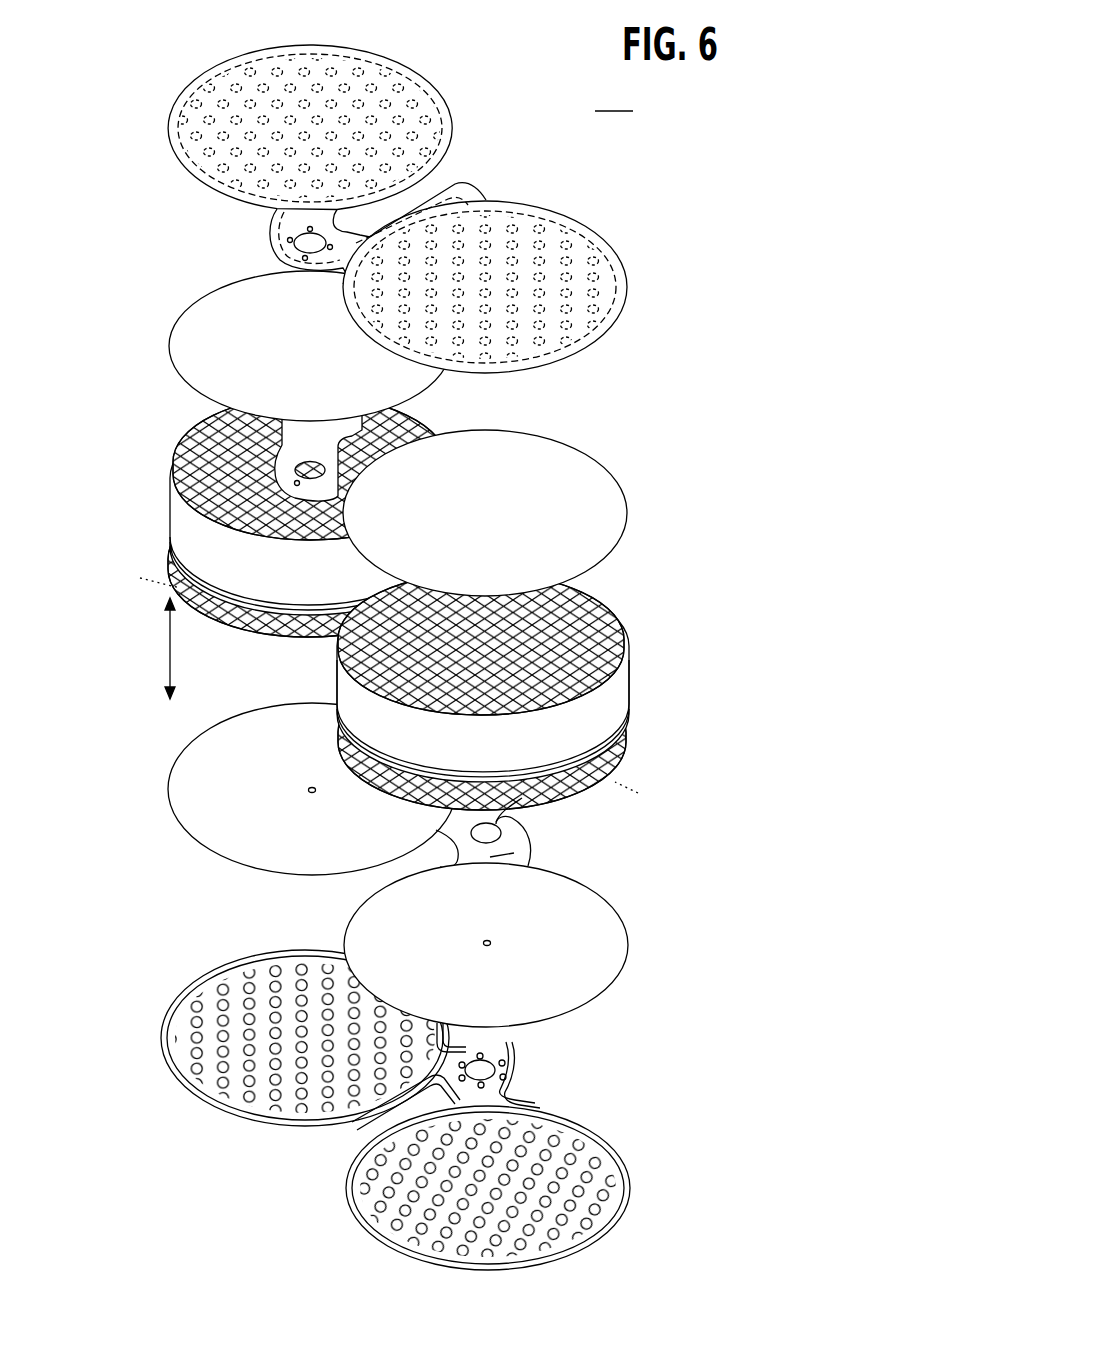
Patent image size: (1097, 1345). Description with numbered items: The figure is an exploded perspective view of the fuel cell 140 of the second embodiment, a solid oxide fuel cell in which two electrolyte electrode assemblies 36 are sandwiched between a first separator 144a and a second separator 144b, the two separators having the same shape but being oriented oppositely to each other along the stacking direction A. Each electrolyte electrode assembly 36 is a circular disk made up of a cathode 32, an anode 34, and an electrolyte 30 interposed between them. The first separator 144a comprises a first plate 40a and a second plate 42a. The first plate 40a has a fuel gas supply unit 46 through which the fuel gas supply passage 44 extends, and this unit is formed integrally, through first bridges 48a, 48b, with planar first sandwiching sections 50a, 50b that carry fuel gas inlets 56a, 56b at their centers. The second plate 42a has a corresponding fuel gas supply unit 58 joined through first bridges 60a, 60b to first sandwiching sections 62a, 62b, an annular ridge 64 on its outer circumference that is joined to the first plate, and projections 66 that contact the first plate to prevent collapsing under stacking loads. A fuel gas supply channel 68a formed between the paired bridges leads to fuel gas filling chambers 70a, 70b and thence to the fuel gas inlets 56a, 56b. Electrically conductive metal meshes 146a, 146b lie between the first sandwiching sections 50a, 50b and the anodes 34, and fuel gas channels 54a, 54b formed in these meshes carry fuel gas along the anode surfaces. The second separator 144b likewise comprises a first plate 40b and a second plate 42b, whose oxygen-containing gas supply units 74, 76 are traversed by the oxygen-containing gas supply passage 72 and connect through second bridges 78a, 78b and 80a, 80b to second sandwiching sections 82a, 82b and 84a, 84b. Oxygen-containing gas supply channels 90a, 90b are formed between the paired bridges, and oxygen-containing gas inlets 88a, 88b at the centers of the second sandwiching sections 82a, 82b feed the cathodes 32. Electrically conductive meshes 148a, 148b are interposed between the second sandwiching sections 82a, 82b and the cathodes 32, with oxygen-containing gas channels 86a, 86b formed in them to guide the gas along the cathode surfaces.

The fuel cell 140 is at (614, 98).
The second sandwiching section 84b is at (282, 164).
The second sandwiching section 84a is at (504, 707).
The second bridge 80a is at (440, 191).
The second bridge 80b is at (292, 217).
The oxygen-containing gas supply passage 72 is at (296, 243).
The oxygen-containing gas supply unit 76 is at (302, 259).
The oxygen-containing gas inlet 88b is at (310, 357).
The oxygen-containing gas inlet 88a is at (485, 507).
The second sandwiching section 82b is at (281, 342).
The second sandwiching section 82a is at (516, 500).
The annular ridge 64 is at (600, 333).
The second plate 42b is at (630, 315).
The first plate 40b is at (625, 418).
The second separator 144b is at (718, 345).
The second bridge 78b is at (325, 405).
The second bridge 78a is at (345, 478).
The oxygen-containing gas supply unit 74 is at (300, 463).
The oxygen-containing gas supply channel 90b is at (317, 448).
The oxygen-containing gas supply channel 90a is at (348, 474).
The electrically conductive mesh 148b is at (185, 445).
The electrically conductive mesh 148a is at (618, 612).
The oxygen-containing gas channel 86b is at (172, 477).
The oxygen-containing gas channel 86a is at (620, 637).
The electrically conductive metal mesh 146b is at (176, 565).
The electrically conductive metal mesh 146a is at (612, 748).
The fuel gas channel 54b is at (138, 577).
The fuel gas channel 54a is at (645, 793).
The stacking direction A is at (160, 648).
The fuel gas inlet 56b is at (309, 789).
The fuel gas inlet 56a is at (492, 943).
The cathode 32 is at (630, 668).
The electrolyte 30 is at (628, 690).
The anode 34 is at (630, 718).
The electrolyte electrode assembly 36 is at (532, 680).
The first sandwiching section 50b is at (285, 767).
The first sandwiching section 50a is at (508, 912).
The fuel gas supply unit 46 is at (507, 814).
The first bridge 48b is at (455, 826).
The first bridge 48a is at (518, 854).
The fuel gas supply passage 44 is at (501, 833).
The first sandwiching section 62b is at (291, 1033).
The first sandwiching section 62a is at (524, 1188).
The fuel gas filling chamber 70b is at (224, 970).
The fuel gas filling chamber 70a is at (598, 1190).
The projection 66 is at (193, 1056).
The first plate 40a is at (633, 973).
The second plate 42a is at (633, 1073).
The first separator 144a is at (722, 1000).
The fuel gas supply unit 58 is at (497, 1067).
The first bridge 60a is at (503, 1100).
The fuel gas supply channel 68a is at (508, 1098).
The first bridge 60b is at (438, 1082).